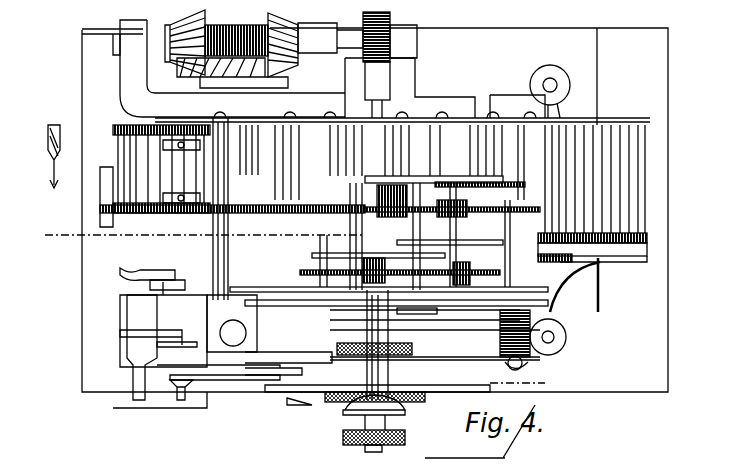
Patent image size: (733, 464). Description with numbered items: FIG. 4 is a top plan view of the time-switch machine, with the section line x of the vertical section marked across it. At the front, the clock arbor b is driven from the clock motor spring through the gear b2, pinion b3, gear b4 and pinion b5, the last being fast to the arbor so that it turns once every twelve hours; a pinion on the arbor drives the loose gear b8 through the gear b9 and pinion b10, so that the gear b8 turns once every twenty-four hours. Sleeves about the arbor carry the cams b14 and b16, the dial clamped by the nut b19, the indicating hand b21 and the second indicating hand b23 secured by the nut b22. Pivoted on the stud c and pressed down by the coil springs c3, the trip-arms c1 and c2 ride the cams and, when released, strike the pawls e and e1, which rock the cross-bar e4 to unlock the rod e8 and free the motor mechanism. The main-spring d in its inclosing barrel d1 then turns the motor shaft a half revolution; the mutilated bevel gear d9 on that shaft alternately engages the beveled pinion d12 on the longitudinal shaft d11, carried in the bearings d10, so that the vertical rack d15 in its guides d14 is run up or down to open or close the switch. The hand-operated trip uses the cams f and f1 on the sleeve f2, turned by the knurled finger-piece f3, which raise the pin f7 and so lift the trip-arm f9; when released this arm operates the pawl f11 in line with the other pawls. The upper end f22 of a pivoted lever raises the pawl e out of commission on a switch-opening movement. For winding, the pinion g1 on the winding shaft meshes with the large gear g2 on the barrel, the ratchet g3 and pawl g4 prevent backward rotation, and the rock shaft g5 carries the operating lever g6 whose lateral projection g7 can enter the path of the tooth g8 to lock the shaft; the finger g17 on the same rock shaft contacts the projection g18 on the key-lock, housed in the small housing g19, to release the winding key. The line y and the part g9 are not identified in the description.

The bearings d10 is at (130, 30).
The beveled pinion d12 is at (190, 25).
The longitudinal shaft d11 is at (275, 28).
The mutilated bevel gear d9 is at (272, 73).
The main-spring d is at (300, 26).
The guides d14 is at (415, 85).
The vertical rack d15 is at (372, 85).
The arbor b is at (625, 128).
The gear b4 is at (560, 260).
The gear b2 is at (650, 262).
The trip-arm f9 is at (575, 285).
The trip-arm c2 is at (579, 313).
The ratchet g3 is at (150, 125).
The pawl g4 is at (245, 126).
The inclosing barrel d1 is at (122, 190).
The large gear g2 is at (100, 207).
The section line y is at (198, 239).
The pinion g1 is at (118, 218).
The pinion b3 is at (508, 228).
The pinion b5 is at (356, 250).
The lever g9 is at (300, 238).
The cam f is at (312, 257).
The pawl f11 is at (312, 300).
The gear b8 is at (308, 300).
The sleeve f2 is at (350, 300).
The pin f7 is at (420, 300).
The cam f1 is at (445, 300).
The gear b9 is at (505, 300).
The knurled finger-piece f3 is at (360, 405).
The cam b16 is at (430, 352).
The pawl e is at (262, 352).
The nut b19 is at (415, 392).
The nut b22 is at (395, 425).
The indicating hand b21 is at (365, 440).
The second indicating hand b23 is at (290, 400).
The pawl e1 is at (330, 362).
The cam b14 is at (417, 322).
The pinion b10 is at (440, 328).
The coil springs c3 is at (556, 333).
The stud c is at (530, 365).
The trip-arm c1 is at (480, 365).
The section line x is at (326, 395).
The cross-bar e4 is at (258, 300).
The rod e8 is at (230, 333).
The rock shaft g5 is at (130, 373).
The projection g18 is at (150, 330).
The operating lever g6 is at (122, 268).
The lateral projection g7 is at (140, 285).
The tooth g8 is at (140, 318).
The projecting finger g17 is at (125, 345).
The small housing g19 is at (172, 360).
The upper end of lever f22 is at (218, 358).